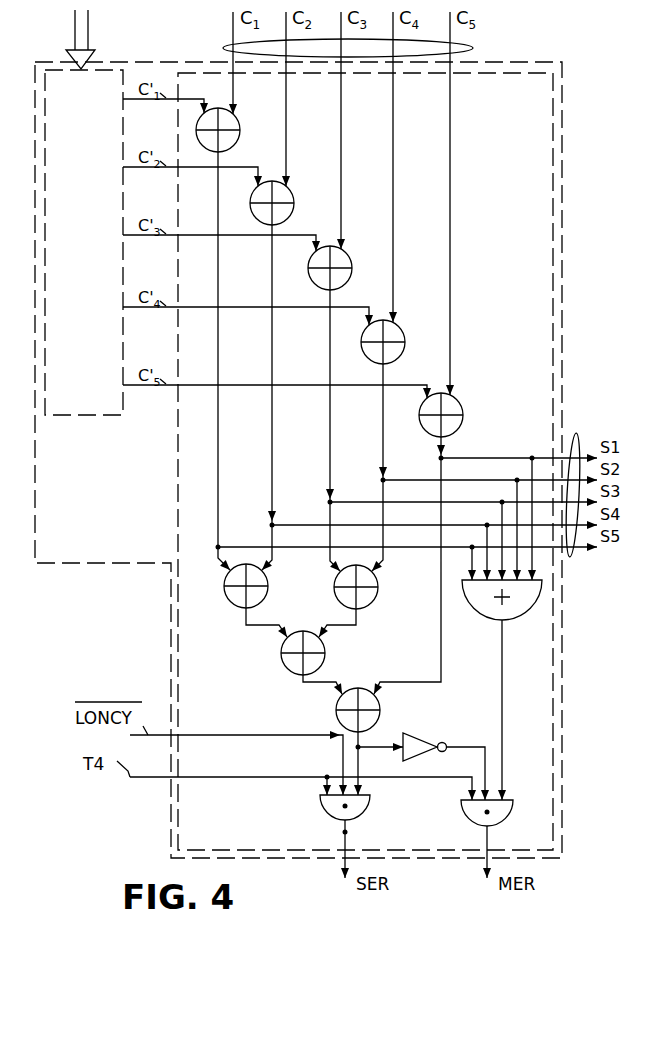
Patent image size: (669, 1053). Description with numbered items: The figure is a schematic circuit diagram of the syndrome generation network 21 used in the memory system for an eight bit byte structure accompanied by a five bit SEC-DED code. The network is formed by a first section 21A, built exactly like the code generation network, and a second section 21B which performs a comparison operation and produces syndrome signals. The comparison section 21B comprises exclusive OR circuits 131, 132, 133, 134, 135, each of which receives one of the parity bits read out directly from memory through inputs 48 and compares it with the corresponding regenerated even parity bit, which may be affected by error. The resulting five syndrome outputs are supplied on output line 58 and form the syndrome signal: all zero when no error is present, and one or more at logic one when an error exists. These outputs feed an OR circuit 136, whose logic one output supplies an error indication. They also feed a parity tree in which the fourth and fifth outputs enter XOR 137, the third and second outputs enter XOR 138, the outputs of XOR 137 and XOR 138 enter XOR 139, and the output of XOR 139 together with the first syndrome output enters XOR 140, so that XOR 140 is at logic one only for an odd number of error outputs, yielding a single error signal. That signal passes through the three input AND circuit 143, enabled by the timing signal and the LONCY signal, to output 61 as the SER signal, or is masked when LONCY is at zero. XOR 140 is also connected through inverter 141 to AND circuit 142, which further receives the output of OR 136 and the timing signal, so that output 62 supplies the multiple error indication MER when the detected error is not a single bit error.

The inputs 48 is at (481, 44).
The syndrome generation network 21 is at (90, 568).
The first section 21A is at (84, 268).
The second section 21B is at (178, 504).
The exclusive OR circuit 131 is at (237, 127).
The exclusive OR circuit 132 is at (290, 185).
The exclusive OR circuit 133 is at (346, 253).
The exclusive OR circuit 134 is at (399, 330).
The exclusive OR circuit 135 is at (458, 400).
The OR circuit 136 is at (510, 622).
The XOR circuit 137 is at (229, 603).
The XOR circuit 138 is at (338, 603).
The XOR circuit 139 is at (283, 666).
The XOR circuit 140 is at (362, 688).
The inverter 141 is at (421, 740).
The AND circuit 142 is at (468, 827).
The AND circuit 143 is at (372, 800).
The output line 58 is at (575, 433).
The output 61 is at (343, 836).
The output 62 is at (492, 843).